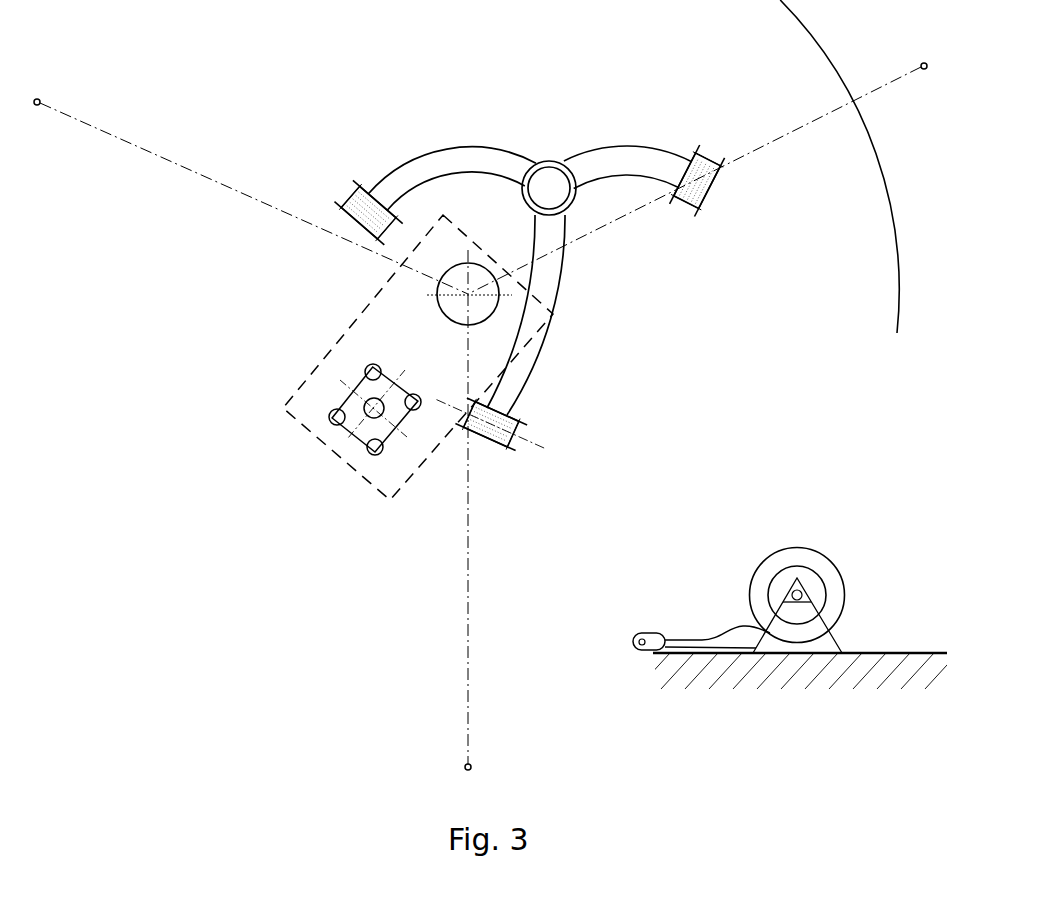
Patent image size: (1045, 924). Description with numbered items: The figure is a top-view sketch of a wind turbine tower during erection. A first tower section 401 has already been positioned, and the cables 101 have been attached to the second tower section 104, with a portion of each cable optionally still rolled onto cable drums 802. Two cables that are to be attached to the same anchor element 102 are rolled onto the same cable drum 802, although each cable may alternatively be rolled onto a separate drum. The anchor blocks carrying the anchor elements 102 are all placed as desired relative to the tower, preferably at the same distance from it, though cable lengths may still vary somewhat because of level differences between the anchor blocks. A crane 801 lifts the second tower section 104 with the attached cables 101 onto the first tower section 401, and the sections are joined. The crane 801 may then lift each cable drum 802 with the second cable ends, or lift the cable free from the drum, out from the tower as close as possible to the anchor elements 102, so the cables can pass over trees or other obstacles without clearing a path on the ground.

The cables 101 is at (478, 172).
The anchor element 102 is at (38, 99).
The second tower section 104 is at (548, 173).
The first tower section 401 is at (447, 300).
The crane 801 is at (350, 422).
The cable drum 802 is at (342, 227).